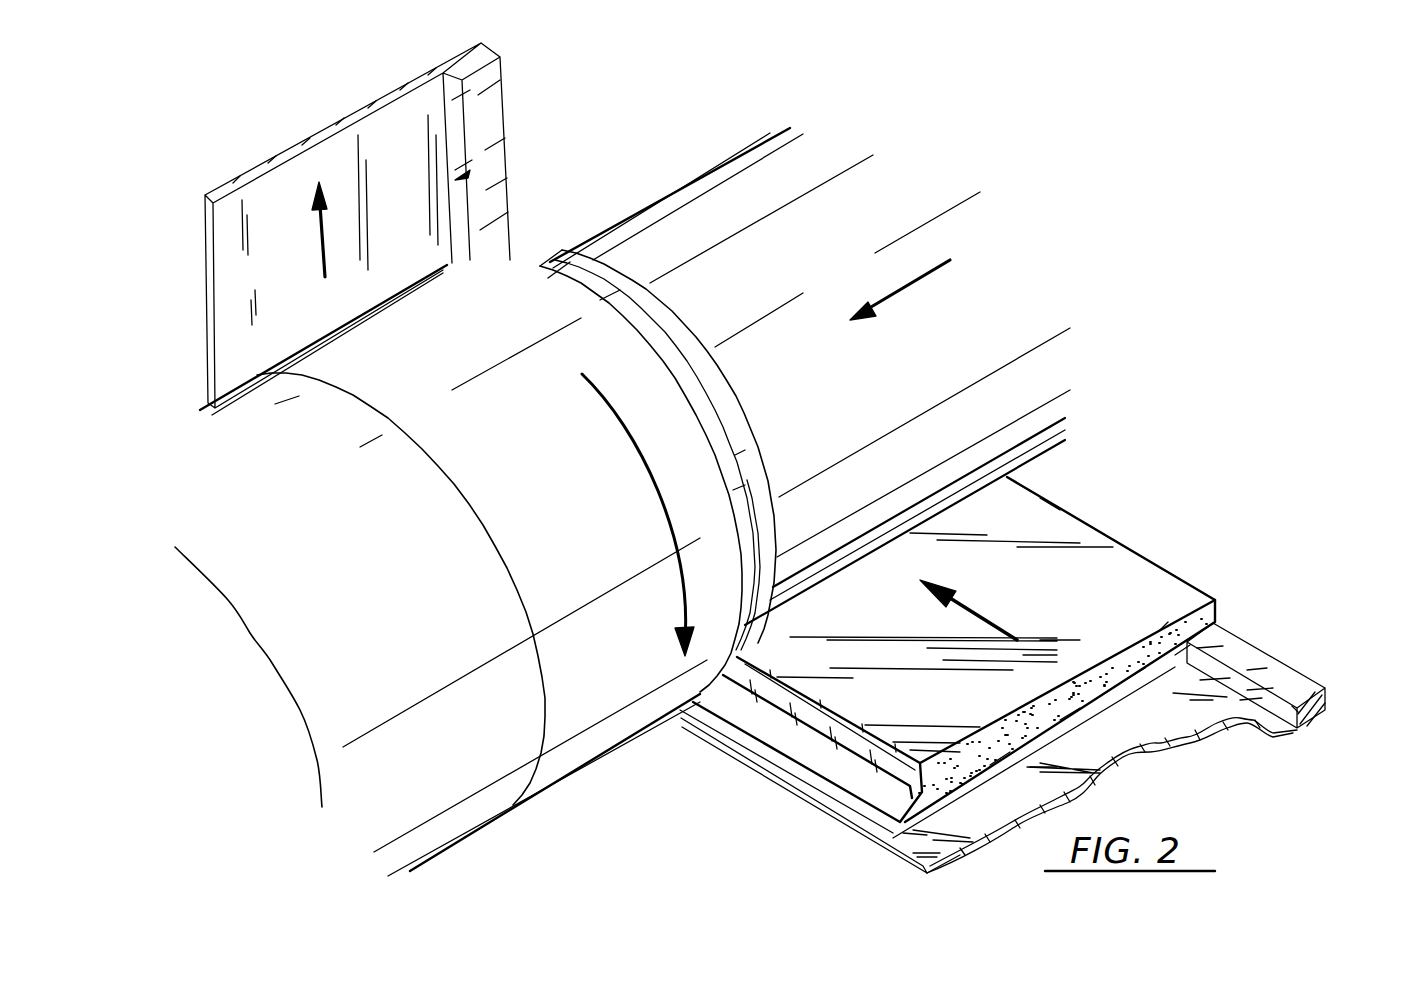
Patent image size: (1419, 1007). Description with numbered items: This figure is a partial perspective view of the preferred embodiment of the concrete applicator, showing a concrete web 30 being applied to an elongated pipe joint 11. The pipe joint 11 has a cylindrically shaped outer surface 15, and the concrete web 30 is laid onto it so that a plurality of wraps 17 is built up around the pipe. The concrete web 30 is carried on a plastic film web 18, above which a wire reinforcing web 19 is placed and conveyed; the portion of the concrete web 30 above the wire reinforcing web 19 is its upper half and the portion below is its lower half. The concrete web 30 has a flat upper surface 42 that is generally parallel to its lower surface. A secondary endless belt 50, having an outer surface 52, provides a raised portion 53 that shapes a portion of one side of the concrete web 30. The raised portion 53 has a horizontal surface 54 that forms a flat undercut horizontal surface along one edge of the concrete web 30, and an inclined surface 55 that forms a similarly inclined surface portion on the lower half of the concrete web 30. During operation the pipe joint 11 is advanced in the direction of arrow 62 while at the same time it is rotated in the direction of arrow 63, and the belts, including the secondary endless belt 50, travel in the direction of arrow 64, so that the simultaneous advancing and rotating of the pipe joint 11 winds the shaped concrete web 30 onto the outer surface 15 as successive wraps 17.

The pipe joint 11 is at (697, 177).
The outer surface 15 is at (985, 341).
The wraps 17 is at (395, 566).
The plastic film web 18 is at (857, 813).
The wire reinforcing web 19 is at (1160, 630).
The concrete web 30 is at (1135, 577).
The upper surface 42 is at (1050, 505).
The secondary endless belt 50 is at (258, 253).
The outer surface 52 is at (1005, 797).
The raised portion 53 is at (491, 141).
The horizontal surface 54 is at (1257, 655).
The inclined surface 55 is at (1280, 703).
The arrow 62 is at (913, 270).
The arrow 63 is at (659, 527).
The arrow 64 is at (322, 243).